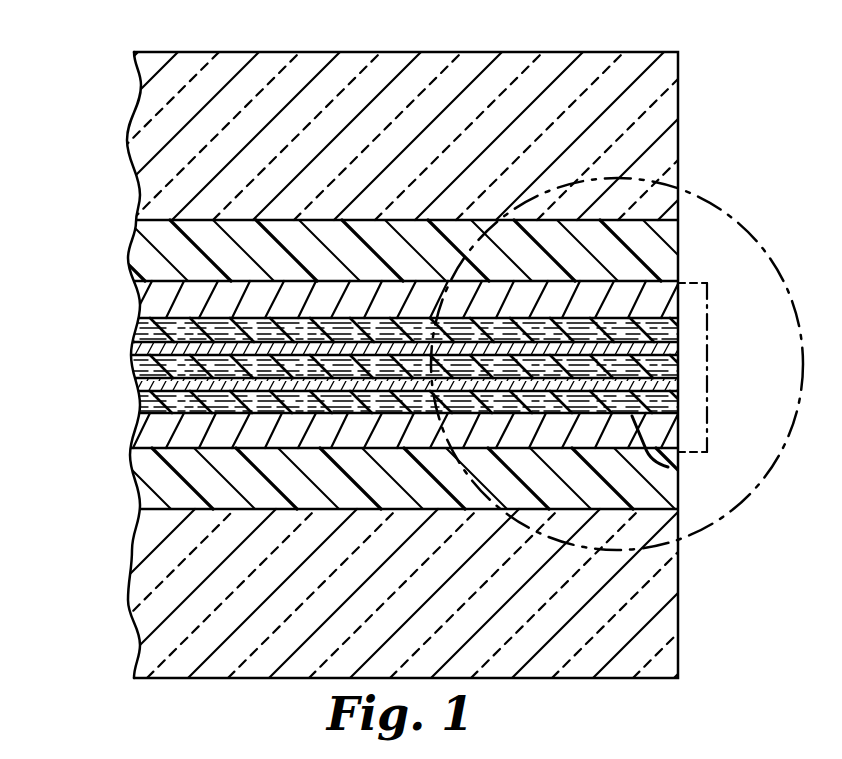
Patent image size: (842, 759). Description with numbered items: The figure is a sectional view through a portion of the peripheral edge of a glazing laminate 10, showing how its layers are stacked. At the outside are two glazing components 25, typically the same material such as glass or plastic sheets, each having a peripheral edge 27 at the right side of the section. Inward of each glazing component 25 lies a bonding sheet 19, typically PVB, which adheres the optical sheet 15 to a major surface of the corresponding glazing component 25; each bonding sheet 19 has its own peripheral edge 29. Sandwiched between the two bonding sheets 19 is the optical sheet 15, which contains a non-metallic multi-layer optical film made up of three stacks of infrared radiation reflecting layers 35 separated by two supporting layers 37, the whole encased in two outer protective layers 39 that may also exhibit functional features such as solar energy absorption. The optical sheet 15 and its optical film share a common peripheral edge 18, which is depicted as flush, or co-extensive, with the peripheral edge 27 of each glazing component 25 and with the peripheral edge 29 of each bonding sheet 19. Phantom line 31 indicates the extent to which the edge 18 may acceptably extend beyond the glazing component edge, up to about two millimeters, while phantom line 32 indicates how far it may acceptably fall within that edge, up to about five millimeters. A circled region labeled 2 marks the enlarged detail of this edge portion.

The glazing laminate 10 is at (694, 53).
The glazing component 25 is at (146, 110).
The peripheral edge of glazing component 27 is at (678, 96).
The bonding sheet 19 is at (135, 232).
The peripheral edge of bonding sheet 29 is at (678, 251).
The optical sheet 15 is at (128, 282).
The outer protective layer 39 is at (135, 289).
The infrared radiation reflecting layer stack 35 is at (135, 322).
The supporting layer 37 is at (135, 348).
The phantom line 31 is at (708, 322).
The peripheral edge of optical film 18 is at (682, 440).
The phantom line 32 is at (668, 467).
The detail of FIG. 2 is at (720, 203).